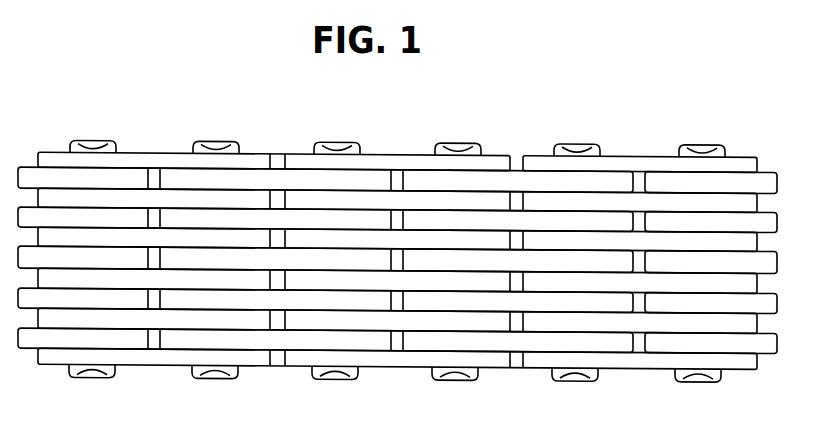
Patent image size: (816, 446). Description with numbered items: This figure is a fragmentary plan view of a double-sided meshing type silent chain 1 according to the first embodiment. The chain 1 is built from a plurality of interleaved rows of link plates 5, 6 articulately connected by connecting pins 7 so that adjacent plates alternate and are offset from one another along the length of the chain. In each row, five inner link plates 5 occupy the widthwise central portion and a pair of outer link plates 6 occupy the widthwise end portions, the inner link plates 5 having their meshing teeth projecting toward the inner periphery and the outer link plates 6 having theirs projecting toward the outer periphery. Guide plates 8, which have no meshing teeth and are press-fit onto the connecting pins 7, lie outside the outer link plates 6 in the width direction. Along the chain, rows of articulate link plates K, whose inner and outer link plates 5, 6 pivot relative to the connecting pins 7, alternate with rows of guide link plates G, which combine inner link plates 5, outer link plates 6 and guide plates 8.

The double-sided meshing type silent chain 1 is at (553, 113).
The inner link plate 5 is at (627, 242).
The outer link plate 6 is at (419, 197).
The connecting pin 7 is at (440, 377).
The guide plate 8 is at (498, 153).
The guide link plate row G is at (173, 238).
The articulate link plate row K is at (293, 258).